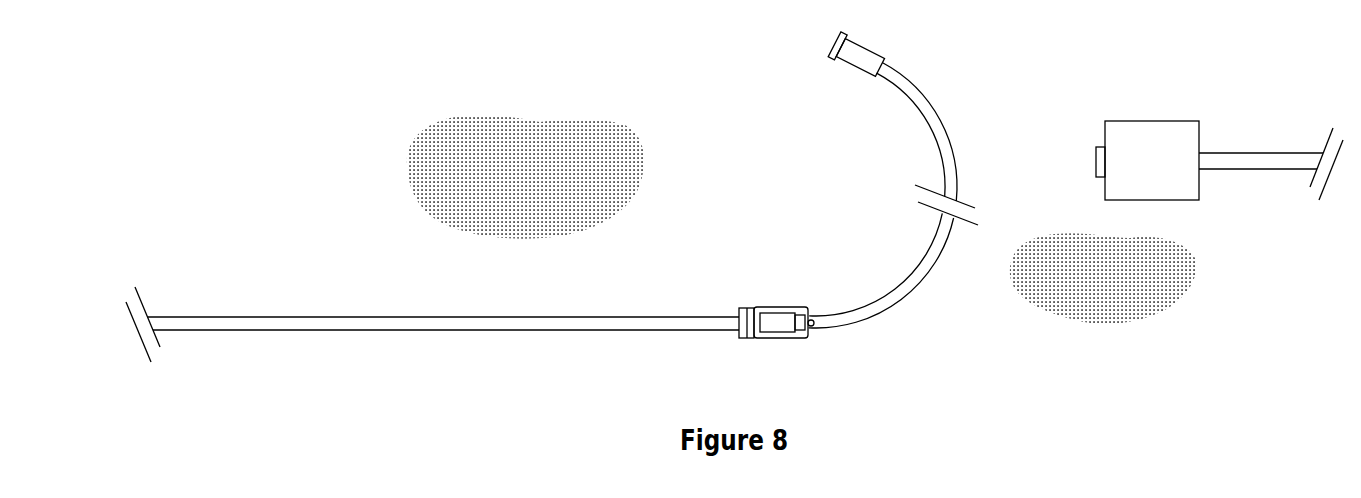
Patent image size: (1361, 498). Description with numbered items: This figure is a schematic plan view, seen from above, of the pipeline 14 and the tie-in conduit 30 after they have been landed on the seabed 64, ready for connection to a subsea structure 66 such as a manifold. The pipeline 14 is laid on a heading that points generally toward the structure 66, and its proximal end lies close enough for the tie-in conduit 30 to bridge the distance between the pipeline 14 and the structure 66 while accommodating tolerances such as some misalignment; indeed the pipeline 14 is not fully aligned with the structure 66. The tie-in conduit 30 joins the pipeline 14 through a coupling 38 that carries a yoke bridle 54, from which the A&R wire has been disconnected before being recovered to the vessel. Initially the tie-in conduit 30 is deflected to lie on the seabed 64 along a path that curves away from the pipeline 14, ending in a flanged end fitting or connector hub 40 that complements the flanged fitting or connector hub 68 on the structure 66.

The pipeline 14 is at (351, 325).
The tie-in conduit 30 is at (883, 298).
The coupling 38 is at (750, 308).
The flanged end fitting or connector hub 40 is at (858, 60).
The yoke bridle 54 is at (803, 308).
The seabed 64 is at (1140, 310).
The subsea structure 66 is at (1162, 138).
The flanged fitting or connector hub 68 is at (1100, 162).